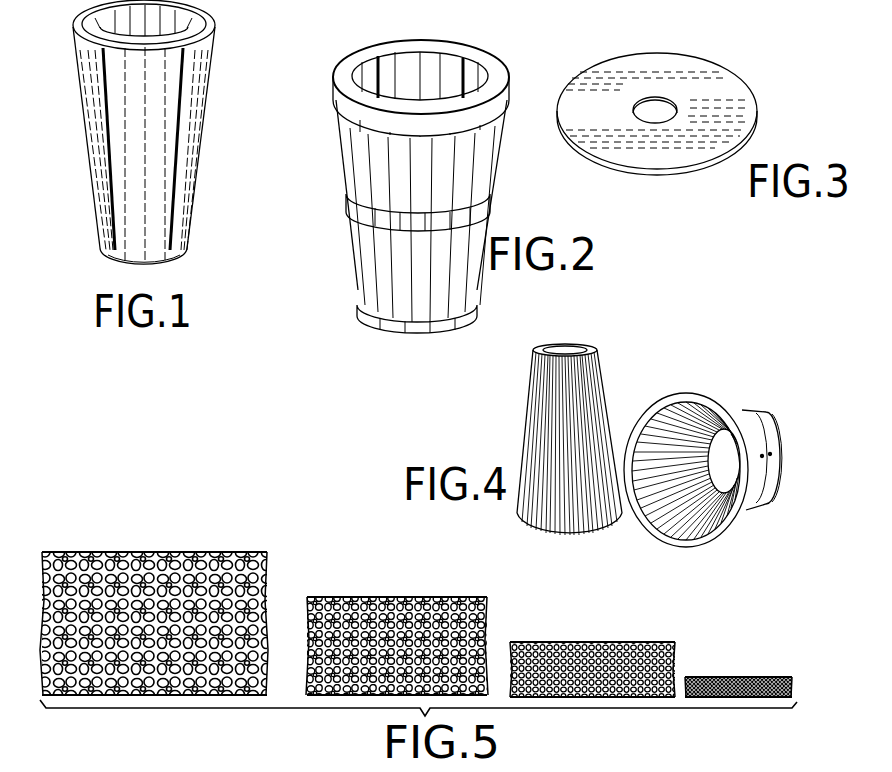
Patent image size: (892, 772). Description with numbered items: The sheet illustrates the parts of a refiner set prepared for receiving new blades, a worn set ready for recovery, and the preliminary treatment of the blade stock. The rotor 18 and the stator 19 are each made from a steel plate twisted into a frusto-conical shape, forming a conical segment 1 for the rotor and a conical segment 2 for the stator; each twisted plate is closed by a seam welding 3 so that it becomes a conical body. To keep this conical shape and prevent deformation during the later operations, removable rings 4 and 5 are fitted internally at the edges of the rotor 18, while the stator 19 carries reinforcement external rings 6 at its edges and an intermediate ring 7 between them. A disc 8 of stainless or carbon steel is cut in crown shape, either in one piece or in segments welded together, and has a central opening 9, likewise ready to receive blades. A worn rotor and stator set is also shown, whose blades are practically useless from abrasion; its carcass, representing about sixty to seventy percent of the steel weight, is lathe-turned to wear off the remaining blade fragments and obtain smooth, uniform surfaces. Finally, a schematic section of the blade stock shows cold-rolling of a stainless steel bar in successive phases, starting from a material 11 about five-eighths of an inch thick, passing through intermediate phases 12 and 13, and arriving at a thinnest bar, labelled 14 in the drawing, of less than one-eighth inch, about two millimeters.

In FIG. 1, the conical segment 1 is at (176, 89).
In FIG. 2, the conical segment 2 is at (412, 62).
In FIG. 1, the seam welding 3 is at (106, 124).
In FIG. 2, the seam welding 3 is at (384, 72).
In FIG. 1, the removable ring 4 is at (190, 14).
In FIG. 1, the removable ring 5 is at (168, 263).
In FIG. 2, the reinforcement external ring 6 is at (353, 108).
In FIG. 2, the intermediate ring 7 is at (480, 205).
In FIG. 3, the disc 8 is at (663, 72).
In FIG. 3, the central opening 9 is at (676, 108).
In FIG. 5, the starting material 11 is at (170, 560).
In FIG. 5, the cold-rolling phase 12 is at (388, 598).
In FIG. 5, the cold-rolling phase 13 is at (581, 640).
In FIG. 5, the thin foam sheet 14 is at (720, 675).
In FIG. 1, the rotor 18 is at (135, 137).
In FIG. 4, the rotor 18 is at (591, 410).
In FIG. 2, the stator 19 is at (420, 167).
In FIG. 4, the stator 19 is at (703, 463).